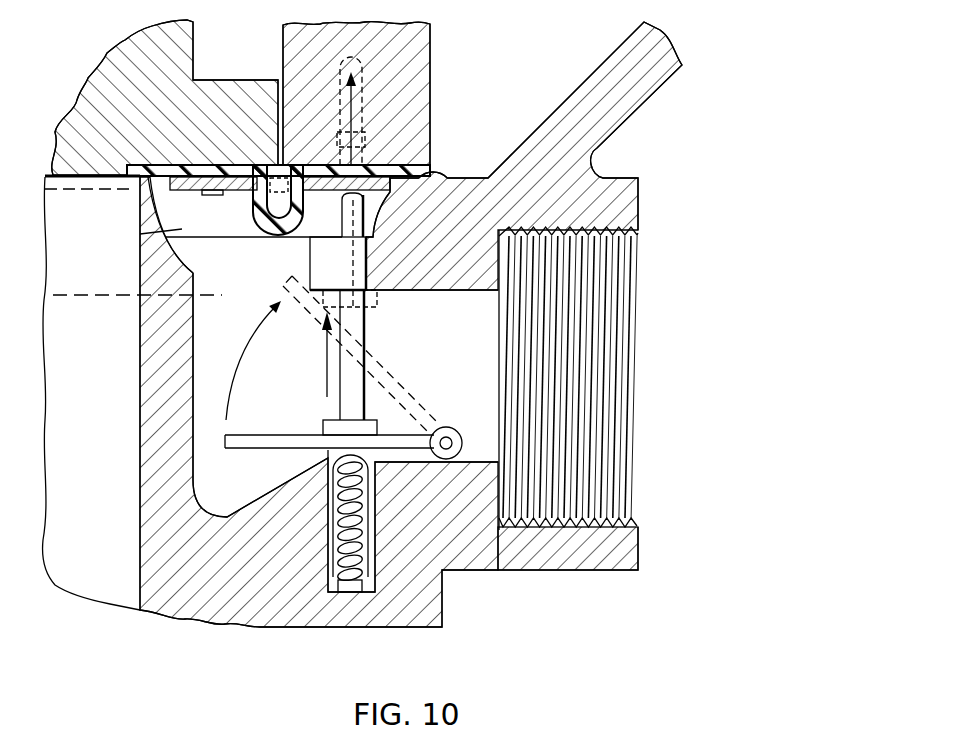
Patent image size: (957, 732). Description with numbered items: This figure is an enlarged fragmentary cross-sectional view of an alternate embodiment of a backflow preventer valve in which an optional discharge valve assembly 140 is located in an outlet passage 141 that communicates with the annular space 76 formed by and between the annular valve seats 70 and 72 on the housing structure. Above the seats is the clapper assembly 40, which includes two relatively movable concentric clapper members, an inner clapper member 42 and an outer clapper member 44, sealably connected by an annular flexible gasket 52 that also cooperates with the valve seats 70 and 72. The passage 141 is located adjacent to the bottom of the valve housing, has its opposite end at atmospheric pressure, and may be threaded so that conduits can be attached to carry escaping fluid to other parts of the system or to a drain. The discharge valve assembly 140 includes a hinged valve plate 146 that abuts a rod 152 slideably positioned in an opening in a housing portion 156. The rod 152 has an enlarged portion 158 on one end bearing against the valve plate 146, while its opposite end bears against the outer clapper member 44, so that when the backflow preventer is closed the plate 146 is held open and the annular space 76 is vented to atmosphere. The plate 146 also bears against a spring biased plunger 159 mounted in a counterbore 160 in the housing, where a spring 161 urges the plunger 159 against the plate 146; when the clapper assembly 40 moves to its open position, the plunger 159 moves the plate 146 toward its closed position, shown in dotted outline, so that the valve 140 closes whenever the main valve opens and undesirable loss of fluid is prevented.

The clapper assembly 40 is at (444, 115).
The inner clapper member 42 is at (118, 84).
The outer clapper member 44 is at (413, 57).
The flexible gasket 52 is at (428, 178).
The annular valve seat 70 is at (142, 208).
The annular valve seat 72 is at (413, 205).
The annular closed space 76 is at (155, 266).
The discharge valve assembly 140 is at (380, 326).
The outlet passage 141 is at (453, 398).
The hinged valve plate 146 is at (388, 363).
The rod 152 is at (347, 221).
The housing portion 156 is at (310, 263).
The enlarged portion 158 is at (323, 427).
The spring biased plunger 159 is at (338, 548).
The counterbore 160 is at (370, 577).
The spring 161 is at (367, 575).